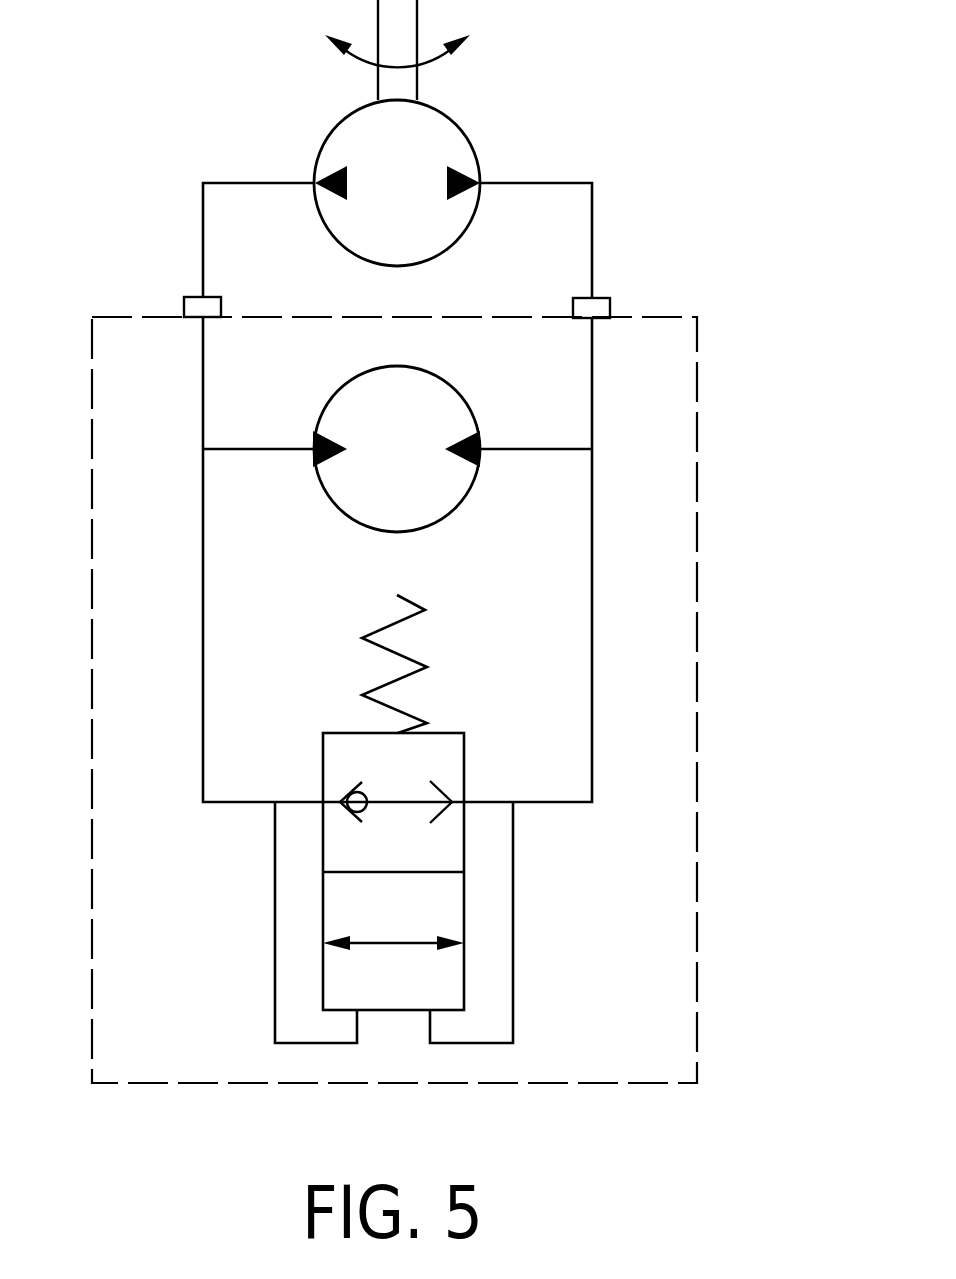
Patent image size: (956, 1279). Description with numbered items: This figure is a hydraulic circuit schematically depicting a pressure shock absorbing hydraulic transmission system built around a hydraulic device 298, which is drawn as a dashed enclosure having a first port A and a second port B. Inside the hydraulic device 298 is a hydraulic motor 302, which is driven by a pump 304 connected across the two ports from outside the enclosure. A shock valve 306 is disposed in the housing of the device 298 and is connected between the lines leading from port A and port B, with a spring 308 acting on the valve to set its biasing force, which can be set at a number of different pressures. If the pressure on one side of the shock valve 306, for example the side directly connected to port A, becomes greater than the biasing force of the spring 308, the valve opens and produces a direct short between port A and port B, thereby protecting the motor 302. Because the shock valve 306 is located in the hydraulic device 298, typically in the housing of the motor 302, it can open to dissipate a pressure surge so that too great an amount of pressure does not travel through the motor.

The hydraulic device 298 is at (673, 730).
The hydraulic motor 302 is at (365, 527).
The pump 304 is at (455, 123).
The shock valve 306 is at (478, 898).
The spring 308 is at (410, 598).
The first port A is at (600, 298).
The second port B is at (196, 297).